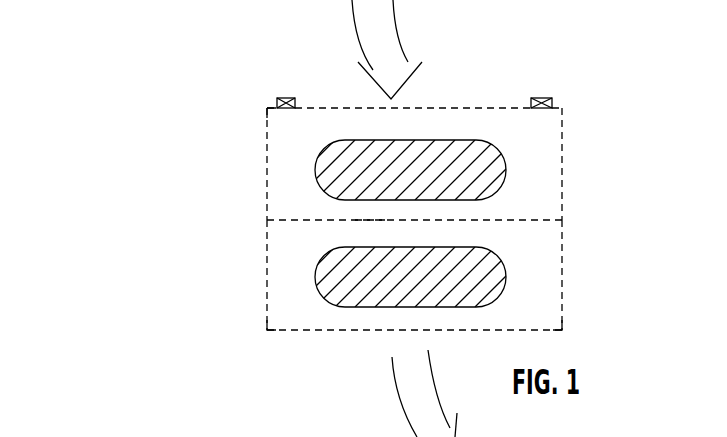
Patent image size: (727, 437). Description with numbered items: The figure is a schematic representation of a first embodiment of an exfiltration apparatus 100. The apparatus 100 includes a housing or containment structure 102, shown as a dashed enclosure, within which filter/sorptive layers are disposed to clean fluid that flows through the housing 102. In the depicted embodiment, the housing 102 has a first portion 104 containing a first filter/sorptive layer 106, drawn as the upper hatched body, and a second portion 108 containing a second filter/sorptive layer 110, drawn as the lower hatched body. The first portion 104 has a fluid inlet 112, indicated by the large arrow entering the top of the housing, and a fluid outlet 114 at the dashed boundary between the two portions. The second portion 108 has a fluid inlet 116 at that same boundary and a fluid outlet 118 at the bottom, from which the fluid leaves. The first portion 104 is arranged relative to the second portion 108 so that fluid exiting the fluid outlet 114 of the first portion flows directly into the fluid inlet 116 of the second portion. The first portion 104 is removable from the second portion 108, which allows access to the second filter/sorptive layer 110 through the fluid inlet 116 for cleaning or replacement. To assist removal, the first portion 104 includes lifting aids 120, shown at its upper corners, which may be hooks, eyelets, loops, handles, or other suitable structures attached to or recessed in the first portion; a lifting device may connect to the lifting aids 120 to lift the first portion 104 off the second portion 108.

The apparatus 100 is at (146, 59).
The housing 102 is at (578, 93).
The first portion 104 is at (563, 172).
The first filter/sorptive layer 106 is at (322, 168).
The second portion 108 is at (563, 272).
The second filter/sorptive layer 110 is at (326, 278).
The fluid inlet 112 is at (410, 108).
The fluid outlet 114 is at (432, 220).
The fluid inlet 116 is at (370, 220).
The fluid outlet 118 is at (402, 330).
The lifting aids 120 is at (285, 96).